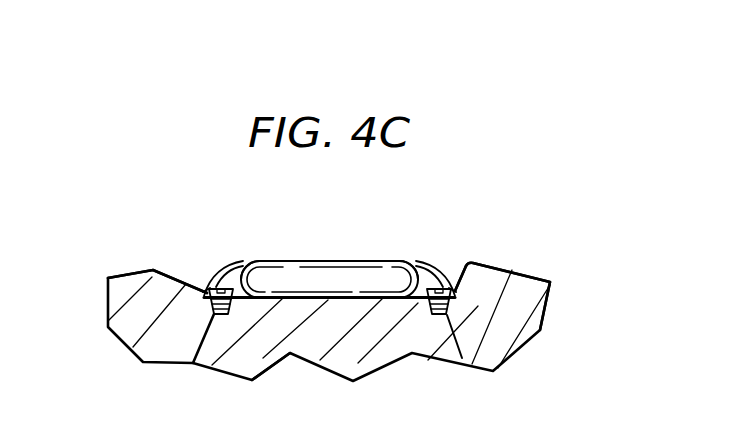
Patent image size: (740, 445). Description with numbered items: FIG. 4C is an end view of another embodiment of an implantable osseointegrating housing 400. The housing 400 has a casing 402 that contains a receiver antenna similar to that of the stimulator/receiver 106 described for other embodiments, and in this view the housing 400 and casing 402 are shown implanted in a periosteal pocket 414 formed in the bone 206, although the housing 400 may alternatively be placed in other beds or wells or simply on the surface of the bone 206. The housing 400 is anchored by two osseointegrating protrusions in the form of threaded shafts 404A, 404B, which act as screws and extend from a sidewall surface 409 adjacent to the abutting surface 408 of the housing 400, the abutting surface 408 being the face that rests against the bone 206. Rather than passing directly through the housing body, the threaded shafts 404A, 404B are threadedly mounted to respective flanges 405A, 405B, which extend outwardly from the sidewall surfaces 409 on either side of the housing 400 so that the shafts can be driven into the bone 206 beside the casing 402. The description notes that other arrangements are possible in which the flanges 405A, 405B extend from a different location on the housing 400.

The stimulator/receiver 106 is at (548, 226).
The bone 206 is at (118, 307).
The implantable osseointegrating housing 400 is at (334, 262).
The casing 402 is at (230, 268).
The threaded shaft 404A is at (195, 362).
The threaded shaft 404B is at (462, 358).
The flange 405A is at (233, 314).
The flange 405B is at (436, 314).
The abutting surface 408 is at (327, 300).
The sidewall surface 409 is at (243, 260).
The periosteal pocket 414 is at (457, 266).